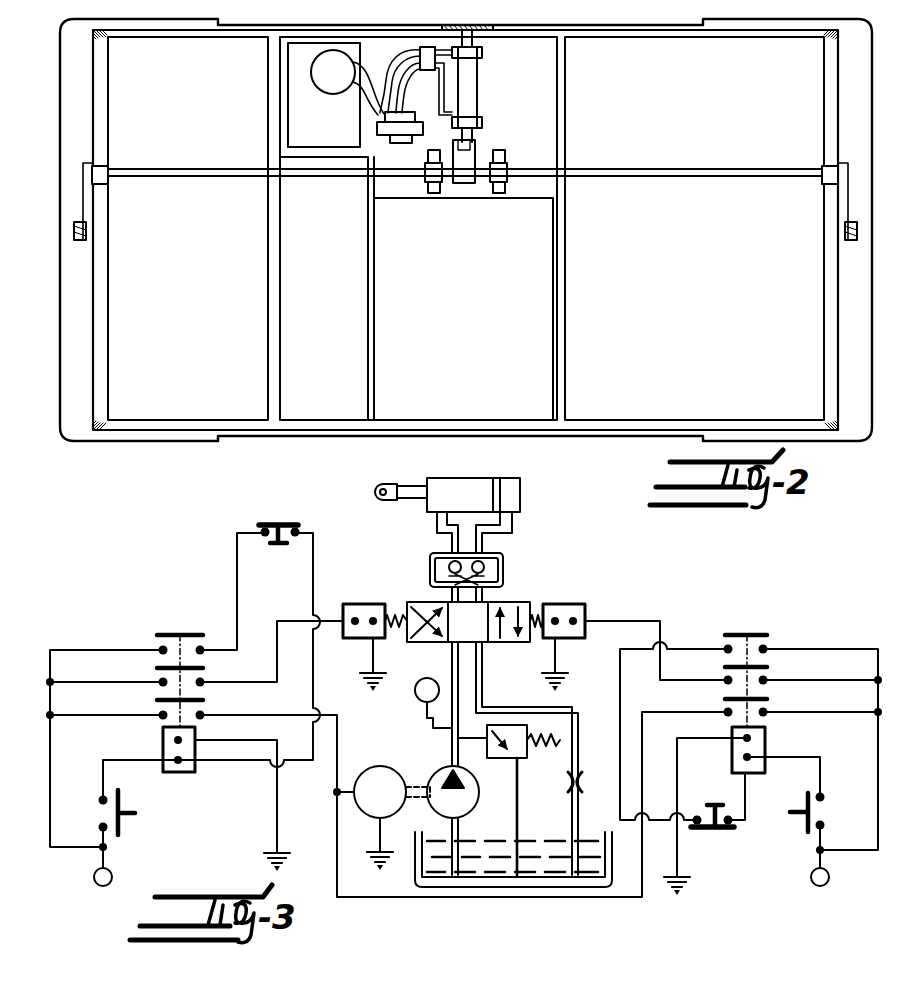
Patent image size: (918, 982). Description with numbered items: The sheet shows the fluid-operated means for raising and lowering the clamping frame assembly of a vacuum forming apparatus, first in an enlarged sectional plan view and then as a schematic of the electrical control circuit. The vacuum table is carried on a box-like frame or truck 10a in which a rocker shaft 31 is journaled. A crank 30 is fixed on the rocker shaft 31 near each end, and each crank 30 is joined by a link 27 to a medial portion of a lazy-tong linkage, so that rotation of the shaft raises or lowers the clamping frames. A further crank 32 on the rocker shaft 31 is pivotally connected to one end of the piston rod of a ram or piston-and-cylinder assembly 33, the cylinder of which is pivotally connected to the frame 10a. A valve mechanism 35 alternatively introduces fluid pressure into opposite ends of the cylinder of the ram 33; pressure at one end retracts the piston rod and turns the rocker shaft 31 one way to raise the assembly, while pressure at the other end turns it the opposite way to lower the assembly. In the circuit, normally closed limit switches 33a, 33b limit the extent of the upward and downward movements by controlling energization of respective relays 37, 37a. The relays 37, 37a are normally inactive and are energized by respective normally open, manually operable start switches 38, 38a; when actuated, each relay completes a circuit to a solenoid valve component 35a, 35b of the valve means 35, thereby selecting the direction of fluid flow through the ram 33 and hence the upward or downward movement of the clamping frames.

In FIG. 2, the box-like frame 10a is at (127, 446).
In FIG. 2, the link 27 is at (74, 243).
In FIG. 2, the crank 30 is at (105, 208).
In FIG. 2, the rocker shaft 31 is at (694, 171).
In FIG. 2, the crank 32 is at (463, 183).
In FIG. 2, the ram or piston-and-cylinder assembly 33 is at (466, 88).
In FIG. 3, the ram or piston-and-cylinder assembly 33 is at (481, 478).
In FIG. 3, the limit switch 33a is at (714, 830).
In FIG. 3, the limit switch 33b is at (272, 523).
In FIG. 3, the valve mechanism 35 is at (501, 604).
In FIG. 3, the solenoid valve component 35a is at (565, 604).
In FIG. 3, the solenoid valve component 35b is at (384, 573).
In FIG. 3, the relay 37 is at (768, 742).
In FIG. 3, the relay 37a is at (158, 745).
In FIG. 3, the start switch 38 is at (815, 813).
In FIG. 3, the start switch 38a is at (110, 803).